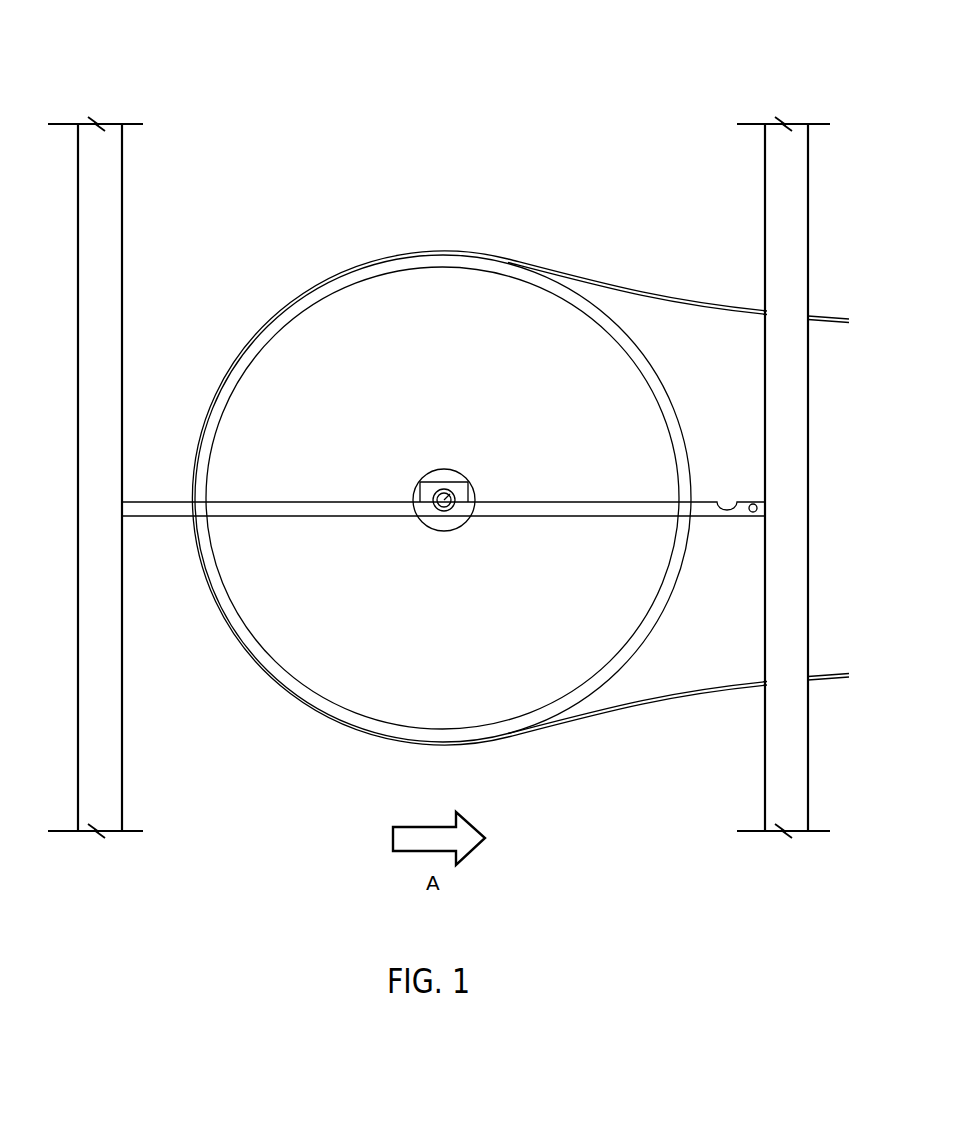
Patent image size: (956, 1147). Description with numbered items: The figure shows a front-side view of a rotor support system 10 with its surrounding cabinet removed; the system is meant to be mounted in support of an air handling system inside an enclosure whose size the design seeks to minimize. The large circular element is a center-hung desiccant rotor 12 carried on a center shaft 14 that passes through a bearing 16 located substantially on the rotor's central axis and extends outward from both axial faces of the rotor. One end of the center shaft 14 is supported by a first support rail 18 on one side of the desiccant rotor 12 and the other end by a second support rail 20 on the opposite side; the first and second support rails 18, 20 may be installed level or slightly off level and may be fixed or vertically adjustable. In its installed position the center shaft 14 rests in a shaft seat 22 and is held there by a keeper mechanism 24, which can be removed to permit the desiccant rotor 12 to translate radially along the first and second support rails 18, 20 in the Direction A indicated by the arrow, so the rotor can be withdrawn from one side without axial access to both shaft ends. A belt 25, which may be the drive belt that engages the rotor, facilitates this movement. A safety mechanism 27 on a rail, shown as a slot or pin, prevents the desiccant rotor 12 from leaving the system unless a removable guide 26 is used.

The rotor support system 10 is at (558, 54).
The desiccant rotor 12 is at (648, 356).
The center shaft 14 is at (455, 488).
The bearing 16 is at (447, 470).
The first support rail 18 is at (443, 459).
The second support rail 20 is at (155, 502).
The shaft seat 22 is at (450, 508).
The keeper mechanism 24 is at (399, 482).
The belt 25 is at (680, 299).
The removable guide 26 is at (413, 492).
The safety mechanism 27 is at (753, 504).